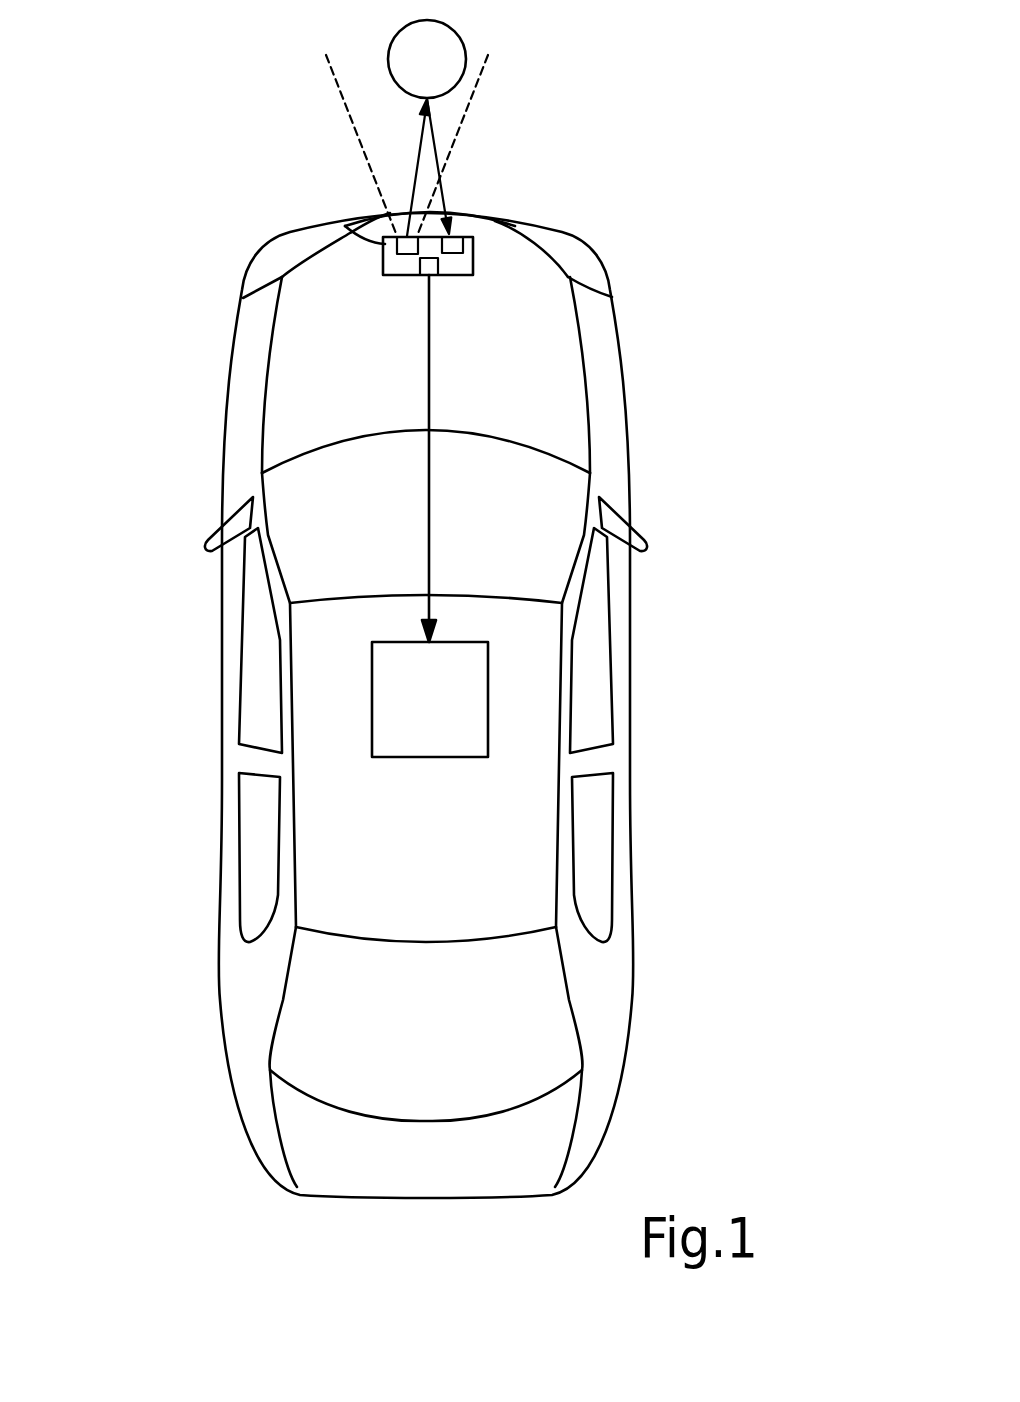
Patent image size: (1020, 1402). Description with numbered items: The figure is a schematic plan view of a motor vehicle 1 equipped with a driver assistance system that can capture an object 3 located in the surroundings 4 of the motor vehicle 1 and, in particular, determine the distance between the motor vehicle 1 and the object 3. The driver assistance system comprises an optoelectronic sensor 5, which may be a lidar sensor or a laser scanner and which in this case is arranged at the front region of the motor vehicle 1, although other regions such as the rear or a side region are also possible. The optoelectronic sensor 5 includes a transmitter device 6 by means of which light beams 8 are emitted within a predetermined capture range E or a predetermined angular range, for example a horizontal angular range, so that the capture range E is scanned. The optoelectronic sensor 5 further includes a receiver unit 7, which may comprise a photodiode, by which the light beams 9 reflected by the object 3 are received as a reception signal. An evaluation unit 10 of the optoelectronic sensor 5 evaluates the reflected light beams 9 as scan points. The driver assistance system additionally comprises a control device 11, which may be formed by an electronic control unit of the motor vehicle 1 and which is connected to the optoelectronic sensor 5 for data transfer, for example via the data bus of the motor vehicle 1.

The motor vehicle 1 is at (197, 178).
The object 3 is at (465, 45).
The surroundings 4 is at (189, 772).
The optoelectronic sensor 5 is at (475, 257).
The transmitter device 6 is at (345, 225).
The receiver unit 7 is at (476, 239).
The light beams 8 is at (414, 196).
The reflected light beams 9 is at (444, 196).
The evaluation unit 10 is at (437, 267).
The control device 11 is at (473, 703).
The capture range E is at (340, 95).